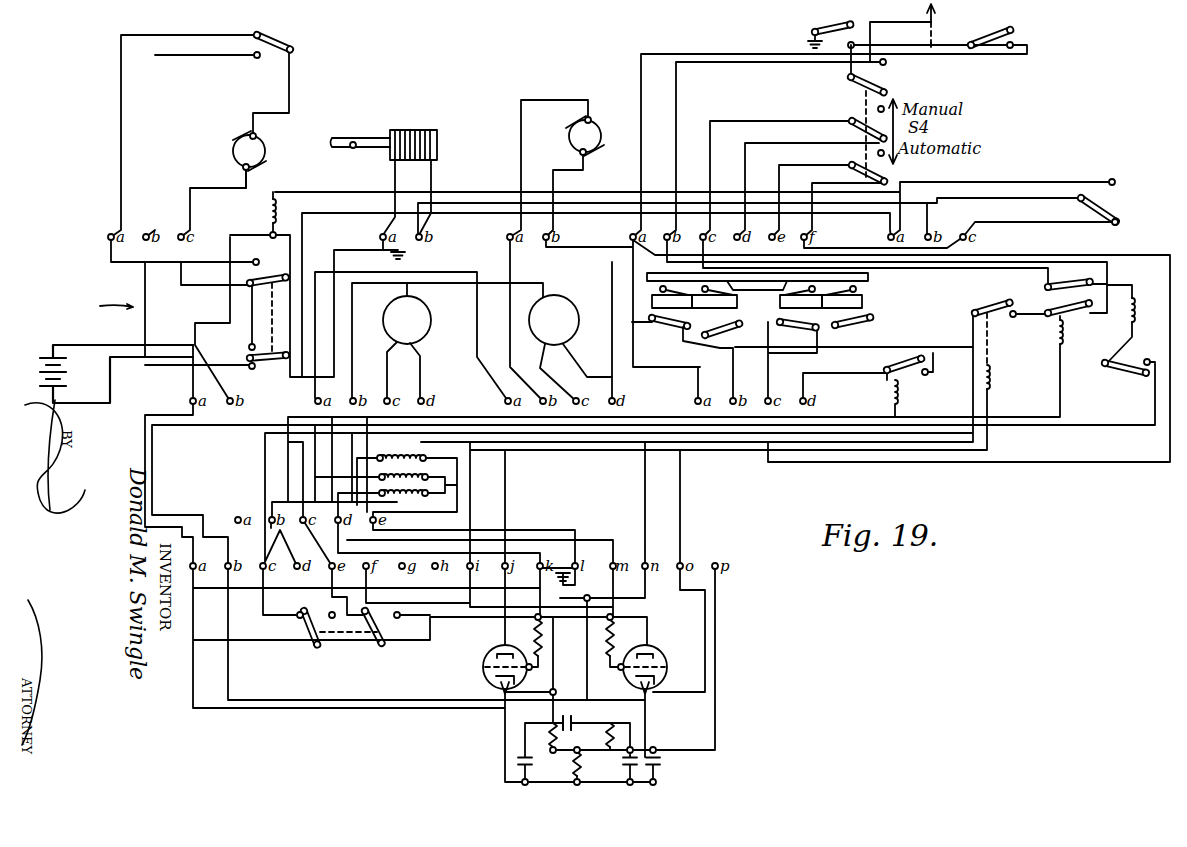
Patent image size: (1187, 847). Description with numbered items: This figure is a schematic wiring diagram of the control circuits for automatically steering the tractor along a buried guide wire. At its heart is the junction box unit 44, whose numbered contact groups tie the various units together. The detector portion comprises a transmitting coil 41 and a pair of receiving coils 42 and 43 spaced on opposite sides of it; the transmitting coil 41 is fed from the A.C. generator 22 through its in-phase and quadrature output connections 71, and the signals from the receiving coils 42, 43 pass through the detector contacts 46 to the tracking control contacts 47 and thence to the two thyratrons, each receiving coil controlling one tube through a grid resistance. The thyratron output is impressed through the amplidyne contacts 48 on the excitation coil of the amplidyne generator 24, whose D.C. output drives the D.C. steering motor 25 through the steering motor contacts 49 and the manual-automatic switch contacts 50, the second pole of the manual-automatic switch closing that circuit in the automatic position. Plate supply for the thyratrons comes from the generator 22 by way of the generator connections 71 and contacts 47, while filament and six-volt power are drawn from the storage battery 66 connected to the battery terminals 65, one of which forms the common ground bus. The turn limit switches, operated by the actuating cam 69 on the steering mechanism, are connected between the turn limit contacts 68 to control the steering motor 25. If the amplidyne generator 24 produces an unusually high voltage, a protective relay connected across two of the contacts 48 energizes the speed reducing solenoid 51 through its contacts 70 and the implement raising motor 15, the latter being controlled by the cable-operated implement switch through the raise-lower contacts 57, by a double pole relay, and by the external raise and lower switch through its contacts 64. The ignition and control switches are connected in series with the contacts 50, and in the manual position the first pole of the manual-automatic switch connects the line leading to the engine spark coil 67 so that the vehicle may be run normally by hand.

The implement raising motor 15 is at (262, 147).
The generator 22 is at (427, 316).
The amplidyne generator 24 is at (574, 312).
The D. C. steering motor 25 is at (598, 133).
The transmitting coil 41 is at (420, 477).
The receiving coil 42 is at (419, 494).
The receiving coil 43 is at (401, 449).
The junction box unit 44 is at (99, 307).
The detector unit contacts 46 is at (222, 520).
The tracking control unit contacts 47 is at (460, 566).
The amplidyne generator contacts 48 is at (565, 401).
The steering motor contacts 49 is at (533, 237).
The manual-automatic switch contacts 50 is at (724, 237).
The speed reducing solenoid 51 is at (418, 129).
The raise-lower motor contacts 57 is at (151, 237).
The external raise and lower switch contacts 64 is at (930, 237).
The battery terminals 65 is at (211, 401).
The storage battery 66 is at (40, 378).
The spark coil connection 67 is at (944, 26).
The turn limit switch contacts 68 is at (755, 401).
The actuating cam 69 is at (760, 306).
The solenoid contacts 70 is at (408, 237).
The generator output connections 71 is at (376, 401).